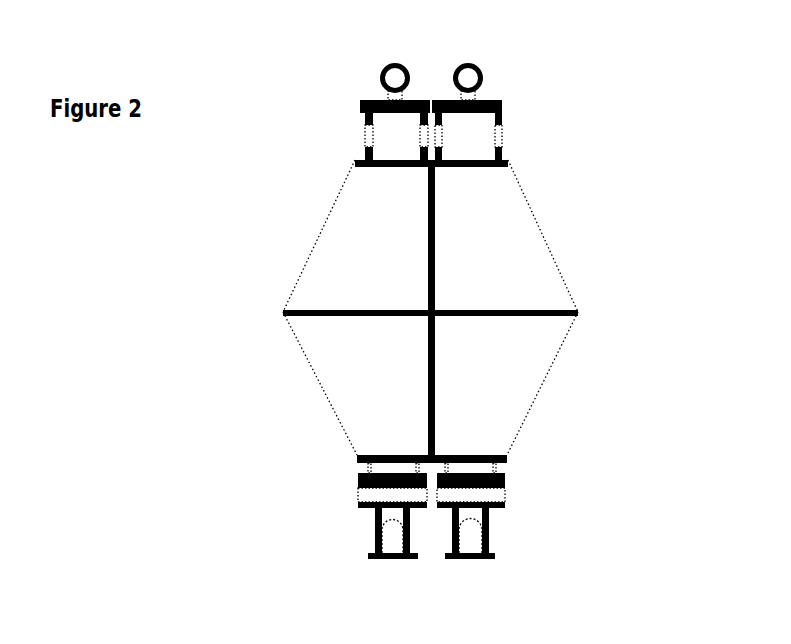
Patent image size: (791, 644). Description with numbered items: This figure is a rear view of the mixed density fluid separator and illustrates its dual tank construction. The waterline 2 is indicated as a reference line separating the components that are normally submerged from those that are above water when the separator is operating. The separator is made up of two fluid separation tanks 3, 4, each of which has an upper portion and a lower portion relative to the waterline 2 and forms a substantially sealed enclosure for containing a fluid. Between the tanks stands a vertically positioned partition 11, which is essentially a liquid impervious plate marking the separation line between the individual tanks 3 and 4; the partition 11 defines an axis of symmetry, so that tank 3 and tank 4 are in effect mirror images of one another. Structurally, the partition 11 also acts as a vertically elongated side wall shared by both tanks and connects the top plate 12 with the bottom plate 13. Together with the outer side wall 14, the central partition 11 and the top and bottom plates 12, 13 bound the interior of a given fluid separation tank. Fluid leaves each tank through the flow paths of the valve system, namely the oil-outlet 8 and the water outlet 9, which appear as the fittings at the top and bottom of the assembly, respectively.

The waterline 2 is at (582, 313).
The fluid separation tank 3 is at (533, 247).
The fluid separation tank 4 is at (337, 247).
The oil-outlet 8 is at (398, 84).
The water outlet 9 is at (345, 508).
The partition 11 is at (437, 370).
The top plate 12 is at (520, 157).
The bottom plate 13 is at (345, 458).
The side wall 14 is at (302, 356).